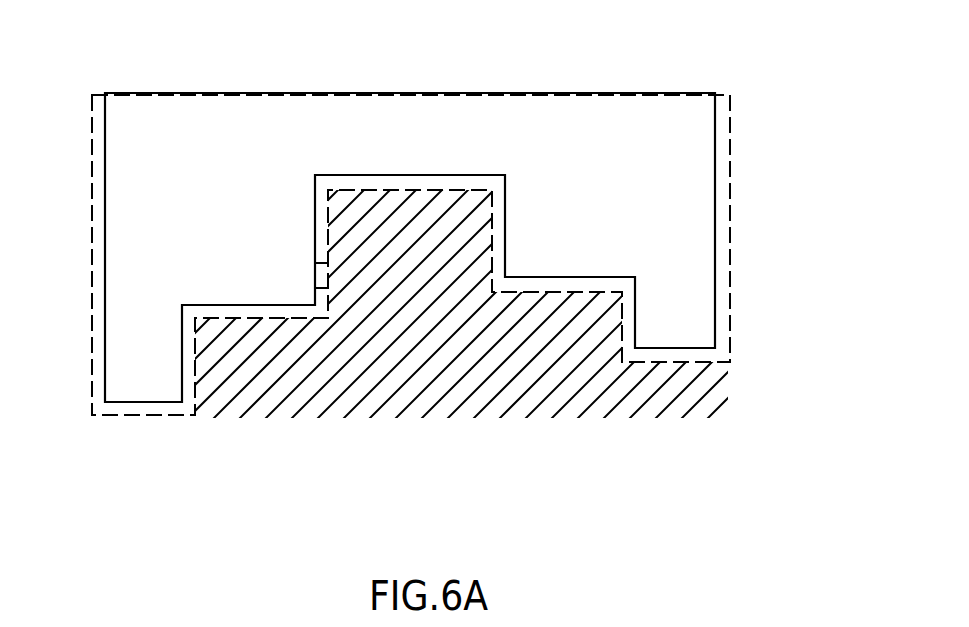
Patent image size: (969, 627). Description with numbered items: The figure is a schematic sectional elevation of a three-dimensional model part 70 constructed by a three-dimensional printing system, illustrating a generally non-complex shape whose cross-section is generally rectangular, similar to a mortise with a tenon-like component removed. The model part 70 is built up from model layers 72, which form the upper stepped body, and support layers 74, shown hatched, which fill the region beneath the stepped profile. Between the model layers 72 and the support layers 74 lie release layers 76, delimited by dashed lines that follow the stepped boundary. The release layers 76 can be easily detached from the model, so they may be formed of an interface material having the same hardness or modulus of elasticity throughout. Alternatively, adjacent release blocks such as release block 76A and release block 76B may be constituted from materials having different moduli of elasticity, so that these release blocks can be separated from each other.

The 3-D model part 70 is at (697, 128).
The model layers 72 is at (627, 172).
The support layers 74 is at (485, 392).
The release layers 76 is at (722, 347).
The release block 76A is at (315, 288).
The release block 76B is at (315, 263).